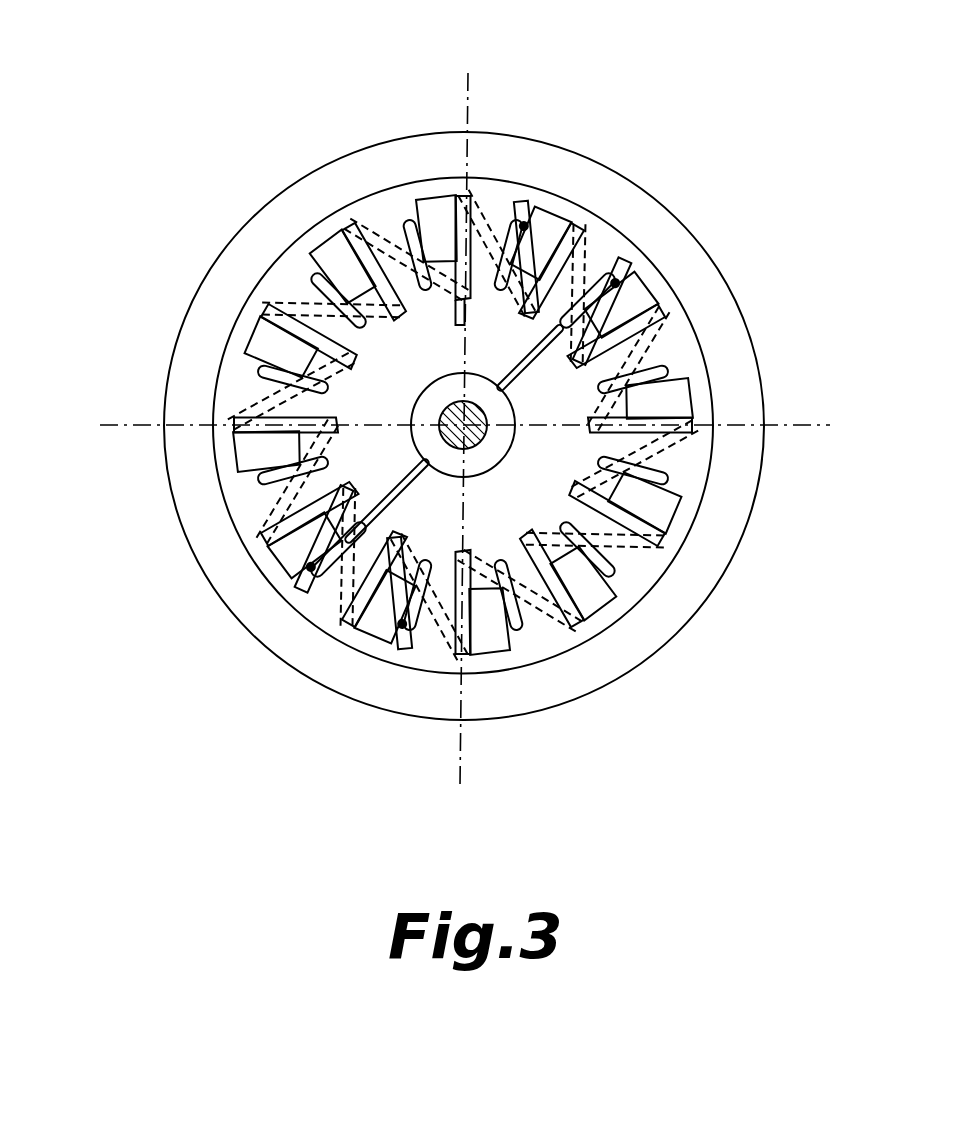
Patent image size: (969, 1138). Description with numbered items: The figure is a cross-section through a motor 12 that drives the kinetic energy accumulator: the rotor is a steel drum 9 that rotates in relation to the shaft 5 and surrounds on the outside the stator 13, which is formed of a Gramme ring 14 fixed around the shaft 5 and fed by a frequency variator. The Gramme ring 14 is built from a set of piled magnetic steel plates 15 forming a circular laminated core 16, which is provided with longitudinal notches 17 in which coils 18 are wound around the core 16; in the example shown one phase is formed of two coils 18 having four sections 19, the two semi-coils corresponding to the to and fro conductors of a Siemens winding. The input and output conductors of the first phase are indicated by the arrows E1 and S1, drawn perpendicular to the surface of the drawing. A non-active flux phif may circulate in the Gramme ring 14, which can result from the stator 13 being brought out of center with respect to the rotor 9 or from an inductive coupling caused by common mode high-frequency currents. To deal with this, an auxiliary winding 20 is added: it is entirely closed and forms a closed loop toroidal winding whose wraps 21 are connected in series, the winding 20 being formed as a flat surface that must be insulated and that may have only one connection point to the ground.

The motor 12 is at (156, 98).
The steel drum 9 is at (350, 195).
The shaft 5 is at (478, 447).
The Gramme ring 14 is at (497, 188).
The magnetic steel plates 15 is at (555, 237).
The coils 18 is at (580, 300).
The auxiliary winding 20 is at (640, 330).
The wraps 21 is at (695, 462).
The stator 13 is at (682, 519).
The circular laminated core 16 is at (598, 530).
The longitudinal notches 17 is at (563, 527).
The sections 19 is at (420, 600).
The non-active flux phif is at (262, 320).
The input conductors E1 is at (417, 271).
The output conductors S1 is at (454, 434).